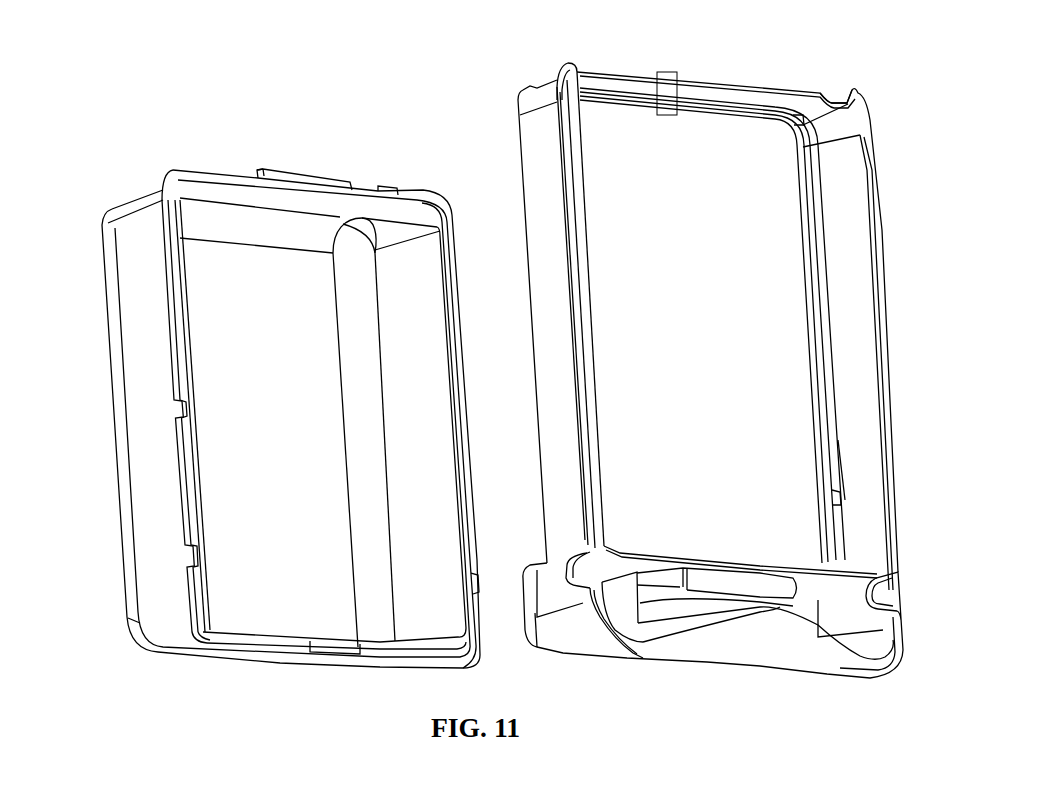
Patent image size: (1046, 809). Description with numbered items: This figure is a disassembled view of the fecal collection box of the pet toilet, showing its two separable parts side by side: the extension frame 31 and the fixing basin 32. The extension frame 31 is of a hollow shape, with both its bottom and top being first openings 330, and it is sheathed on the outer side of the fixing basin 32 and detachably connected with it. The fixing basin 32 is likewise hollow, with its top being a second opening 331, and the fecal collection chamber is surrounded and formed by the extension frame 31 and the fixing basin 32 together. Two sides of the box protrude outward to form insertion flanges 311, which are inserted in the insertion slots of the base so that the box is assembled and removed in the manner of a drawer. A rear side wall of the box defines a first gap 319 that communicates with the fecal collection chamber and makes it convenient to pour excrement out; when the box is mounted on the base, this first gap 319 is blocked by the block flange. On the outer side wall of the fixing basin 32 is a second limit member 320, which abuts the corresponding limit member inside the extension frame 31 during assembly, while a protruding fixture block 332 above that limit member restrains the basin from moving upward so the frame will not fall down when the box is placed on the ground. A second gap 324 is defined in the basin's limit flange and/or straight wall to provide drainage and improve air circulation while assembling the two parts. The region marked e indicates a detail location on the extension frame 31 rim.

The extension frame 31 is at (530, 128).
The insertion flange 311 is at (560, 75).
The first gap 319 is at (835, 86).
The first opening 330 is at (732, 130).
The fixture block 332 is at (828, 305).
The fixing basin 32 is at (130, 393).
The second limit member 320 is at (163, 180).
The second gap 324 is at (241, 170).
The second opening 331 is at (315, 208).
The detail region e is at (672, 73).